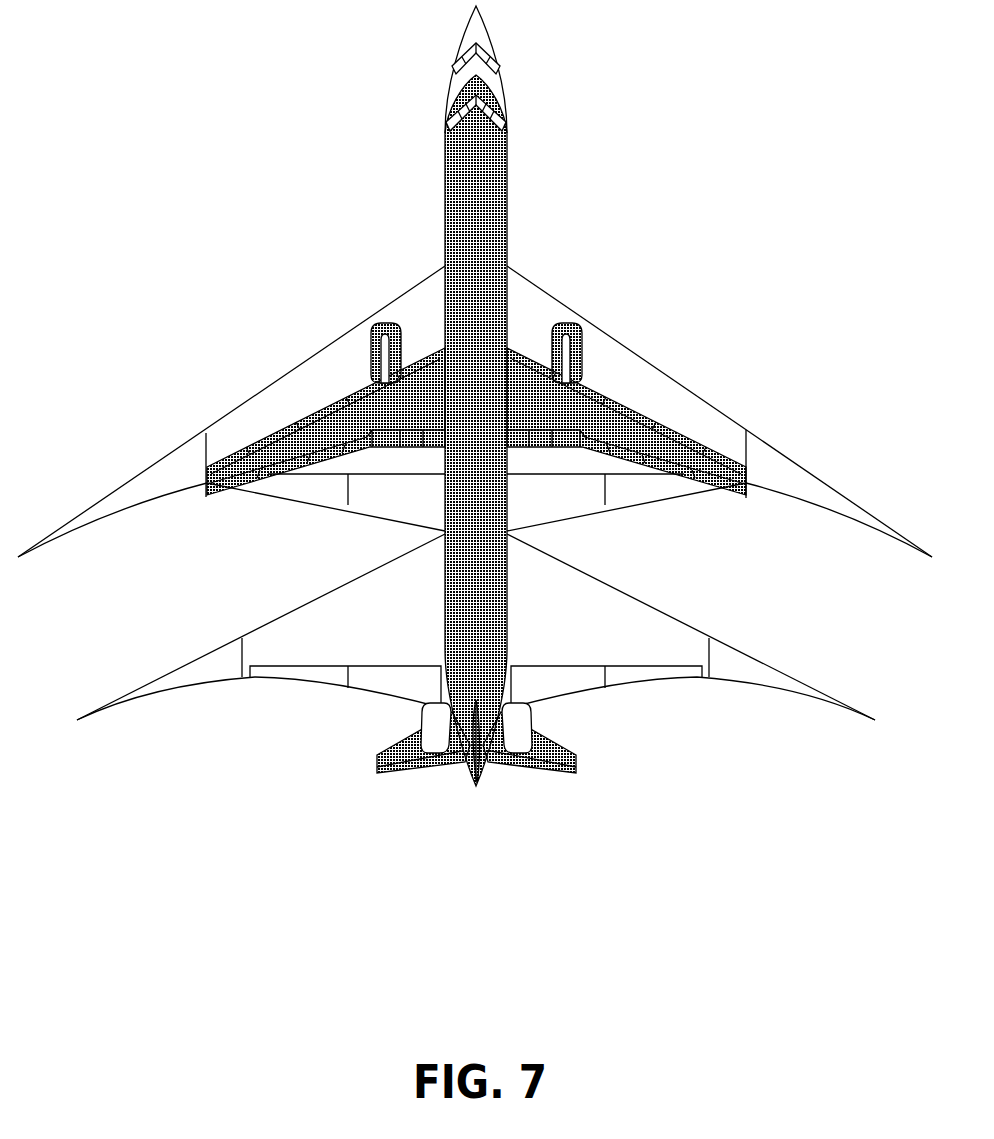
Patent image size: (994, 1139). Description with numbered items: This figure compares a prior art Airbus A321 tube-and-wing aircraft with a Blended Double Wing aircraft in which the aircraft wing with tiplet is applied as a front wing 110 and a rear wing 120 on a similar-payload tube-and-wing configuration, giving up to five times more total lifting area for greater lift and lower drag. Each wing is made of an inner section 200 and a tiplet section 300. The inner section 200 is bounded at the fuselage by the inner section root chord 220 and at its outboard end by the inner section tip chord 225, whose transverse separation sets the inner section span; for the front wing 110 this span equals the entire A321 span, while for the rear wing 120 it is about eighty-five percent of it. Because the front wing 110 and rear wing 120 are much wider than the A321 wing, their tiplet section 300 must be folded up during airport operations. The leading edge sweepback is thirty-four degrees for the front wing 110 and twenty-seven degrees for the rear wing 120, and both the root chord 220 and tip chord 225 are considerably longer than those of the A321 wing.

The front wing 110 is at (237, 440).
The rear wing 120 is at (287, 642).
The inner section 200 is at (653, 388).
The inner section root chord 220 is at (510, 312).
The inner section tip chord 225 is at (750, 450).
The tiplet section 300 is at (793, 475).